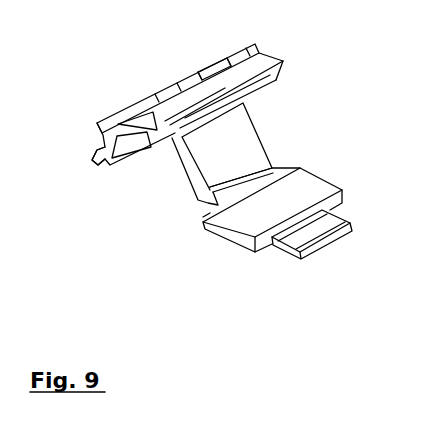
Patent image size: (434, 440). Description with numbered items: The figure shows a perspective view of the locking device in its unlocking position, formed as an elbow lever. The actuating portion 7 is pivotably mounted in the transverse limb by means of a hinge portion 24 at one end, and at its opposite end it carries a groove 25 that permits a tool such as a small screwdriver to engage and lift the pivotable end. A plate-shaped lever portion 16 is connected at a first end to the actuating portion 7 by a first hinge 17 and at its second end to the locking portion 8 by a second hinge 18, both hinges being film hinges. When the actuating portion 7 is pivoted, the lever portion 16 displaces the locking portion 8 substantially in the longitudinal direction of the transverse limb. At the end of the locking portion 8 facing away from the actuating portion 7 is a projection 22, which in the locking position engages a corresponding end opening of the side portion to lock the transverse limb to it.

The actuating portion 7 is at (158, 92).
The groove 25 is at (212, 70).
The first hinge 17 is at (205, 110).
The hinge portion 24 is at (100, 158).
The lever portion 16 is at (220, 148).
The second hinge 18 is at (270, 168).
The locking portion 8 is at (250, 215).
The projection 22 is at (323, 221).